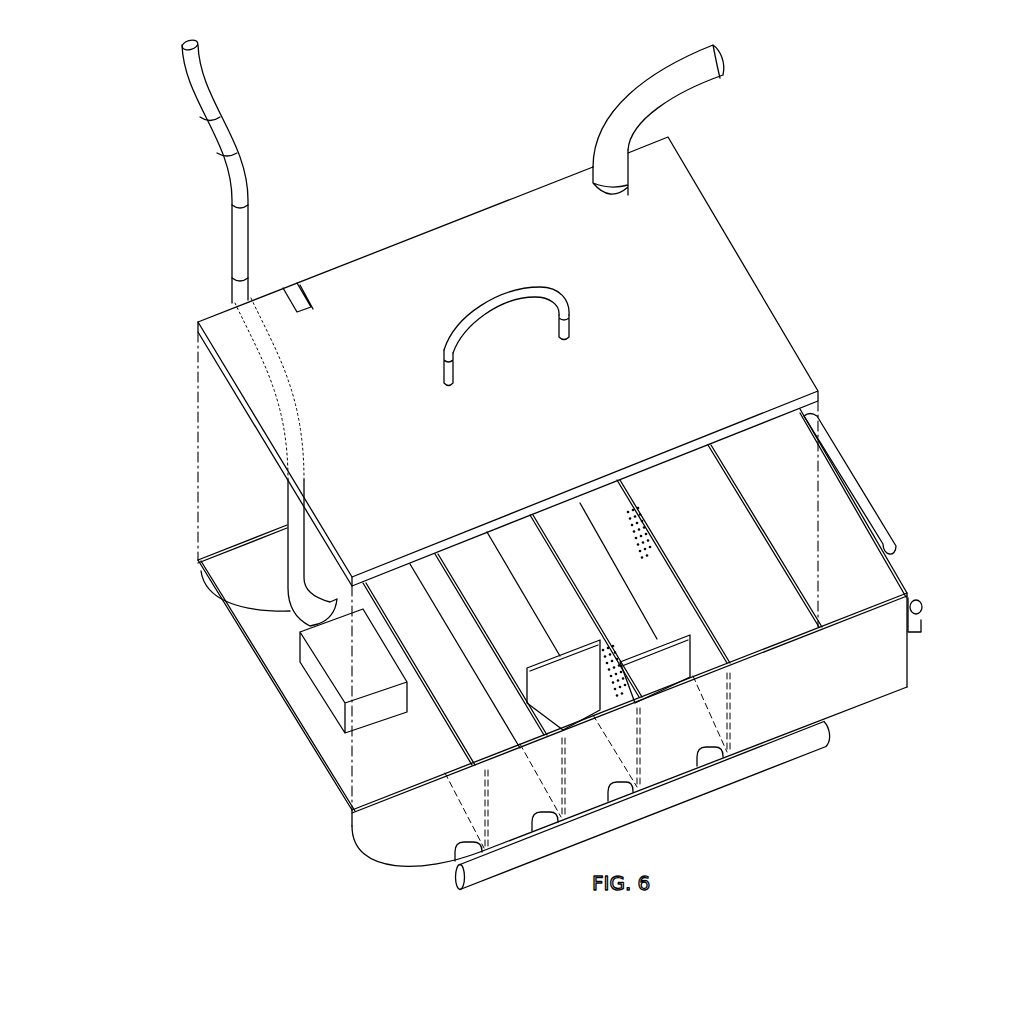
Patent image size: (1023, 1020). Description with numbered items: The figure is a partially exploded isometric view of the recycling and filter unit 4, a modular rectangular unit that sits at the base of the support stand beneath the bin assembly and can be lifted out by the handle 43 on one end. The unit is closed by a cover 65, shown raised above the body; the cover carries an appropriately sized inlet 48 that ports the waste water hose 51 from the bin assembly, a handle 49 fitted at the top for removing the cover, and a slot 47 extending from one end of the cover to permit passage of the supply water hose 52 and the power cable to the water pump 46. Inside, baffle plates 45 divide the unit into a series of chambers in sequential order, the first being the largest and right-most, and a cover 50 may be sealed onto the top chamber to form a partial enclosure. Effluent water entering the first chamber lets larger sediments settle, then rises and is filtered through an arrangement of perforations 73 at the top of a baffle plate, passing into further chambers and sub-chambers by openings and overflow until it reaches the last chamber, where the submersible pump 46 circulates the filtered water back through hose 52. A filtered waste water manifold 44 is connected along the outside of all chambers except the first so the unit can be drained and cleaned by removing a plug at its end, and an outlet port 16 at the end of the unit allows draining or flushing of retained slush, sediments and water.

The recycling and filter unit 4 is at (588, 464).
The outlet port 16 is at (913, 632).
The handle 43 is at (860, 488).
The filtered waste water manifold 44 is at (692, 788).
The baffle plates 45 is at (433, 708).
The submersible water pump 46 is at (343, 690).
The slot 47 is at (285, 288).
The inlet 48 is at (618, 190).
The handle 49 is at (540, 288).
The cover 50 is at (887, 582).
The waste water hose 51 is at (625, 110).
The supply water hose 52 is at (228, 146).
The cover 65 is at (732, 293).
The perforations 73 is at (617, 658).